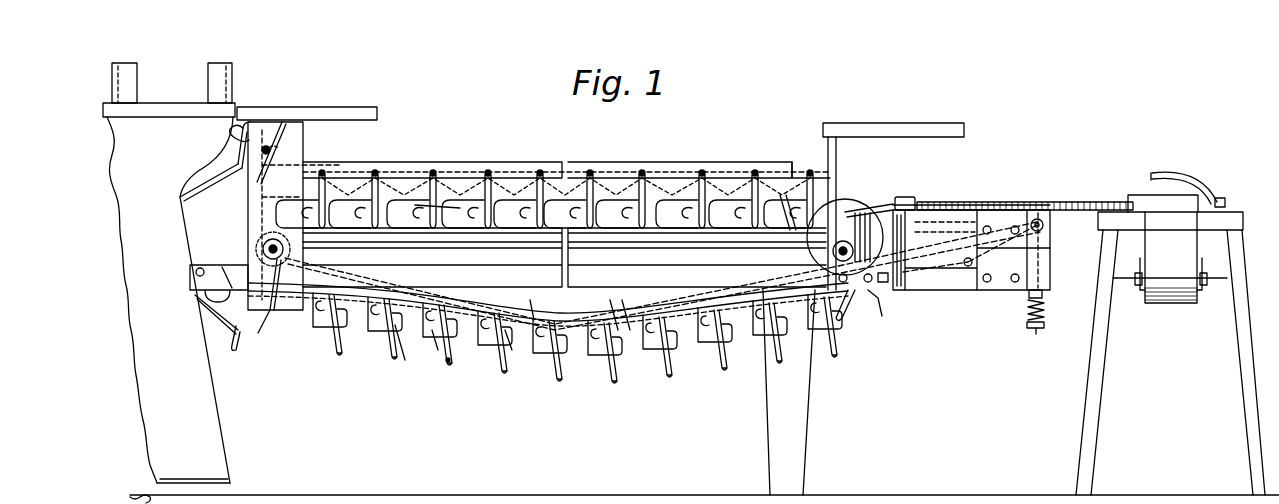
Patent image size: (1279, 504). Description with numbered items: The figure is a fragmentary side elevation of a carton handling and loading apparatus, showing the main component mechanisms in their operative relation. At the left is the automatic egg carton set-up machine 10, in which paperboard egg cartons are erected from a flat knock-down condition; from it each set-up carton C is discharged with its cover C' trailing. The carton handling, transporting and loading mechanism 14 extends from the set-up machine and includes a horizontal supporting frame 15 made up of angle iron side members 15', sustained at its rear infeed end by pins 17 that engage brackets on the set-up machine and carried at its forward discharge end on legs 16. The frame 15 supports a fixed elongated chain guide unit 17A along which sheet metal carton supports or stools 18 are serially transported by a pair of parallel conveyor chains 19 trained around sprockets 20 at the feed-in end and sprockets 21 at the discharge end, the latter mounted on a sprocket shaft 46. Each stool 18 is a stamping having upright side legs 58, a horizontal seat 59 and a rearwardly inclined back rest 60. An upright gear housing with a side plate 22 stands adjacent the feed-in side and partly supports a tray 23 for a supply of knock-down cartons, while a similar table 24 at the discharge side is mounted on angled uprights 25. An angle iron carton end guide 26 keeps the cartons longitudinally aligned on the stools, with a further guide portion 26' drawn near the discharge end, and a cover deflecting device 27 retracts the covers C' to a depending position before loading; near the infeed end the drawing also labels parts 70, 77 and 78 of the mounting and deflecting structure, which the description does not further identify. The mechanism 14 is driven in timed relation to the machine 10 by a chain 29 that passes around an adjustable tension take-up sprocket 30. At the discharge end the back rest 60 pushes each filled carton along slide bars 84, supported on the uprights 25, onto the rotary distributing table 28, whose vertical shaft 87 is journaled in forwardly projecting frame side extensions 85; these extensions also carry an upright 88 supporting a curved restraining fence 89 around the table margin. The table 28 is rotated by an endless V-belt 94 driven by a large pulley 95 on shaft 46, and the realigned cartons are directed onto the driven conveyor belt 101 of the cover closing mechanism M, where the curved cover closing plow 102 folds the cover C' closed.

The egg carton set-up machine 10 is at (205, 420).
The carton handling, transporting and loading mechanism 14 is at (482, 394).
The horizontal supporting frame 15 is at (613, 336).
The angle iron side members 15' is at (450, 312).
The legs 16 is at (798, 432).
The pins 17 is at (197, 268).
The chain guide unit 17A is at (539, 266).
The carton supports or stools 18 is at (505, 203).
The conveyor chains 19 is at (395, 354).
The feed-in sprockets 20 is at (268, 305).
The discharge sprockets 21 is at (888, 306).
The gear housing side plate 22 is at (303, 144).
The tray or platform 23 is at (365, 113).
The table or tray 24 is at (942, 125).
The angled uprights 25 is at (840, 147).
The carton end guide 26 is at (622, 172).
The pocket 26' is at (788, 175).
The cover deflecting device 27 is at (228, 146).
The rotary distributing table 28 is at (1075, 202).
The link belt or chain 29 is at (232, 343).
The idler or tension take-up sprocket 30 is at (200, 297).
The sprocket shaft 46 is at (835, 312).
The upright side legs 58 is at (500, 348).
The horizontal seat 59 is at (436, 346).
The back rest 60 is at (448, 364).
The lever 70 is at (273, 122).
The arm 77 is at (232, 152).
The brace 78 is at (197, 190).
The slide bars 84 is at (872, 208).
The side extensions 85 is at (969, 292).
The vertical shaft 87 is at (1028, 318).
The upright 88 is at (973, 253).
The curved restraining fence or guard 89 is at (912, 205).
The V-belt 94 is at (956, 292).
The large diameter pulley 95 is at (880, 244).
The driven conveyor belt 101 is at (1182, 280).
The curved cover closing plow 102 is at (1208, 188).
The carton C is at (566, 158).
The carton cover C' is at (436, 210).
The cover closing mechanism M is at (1196, 147).